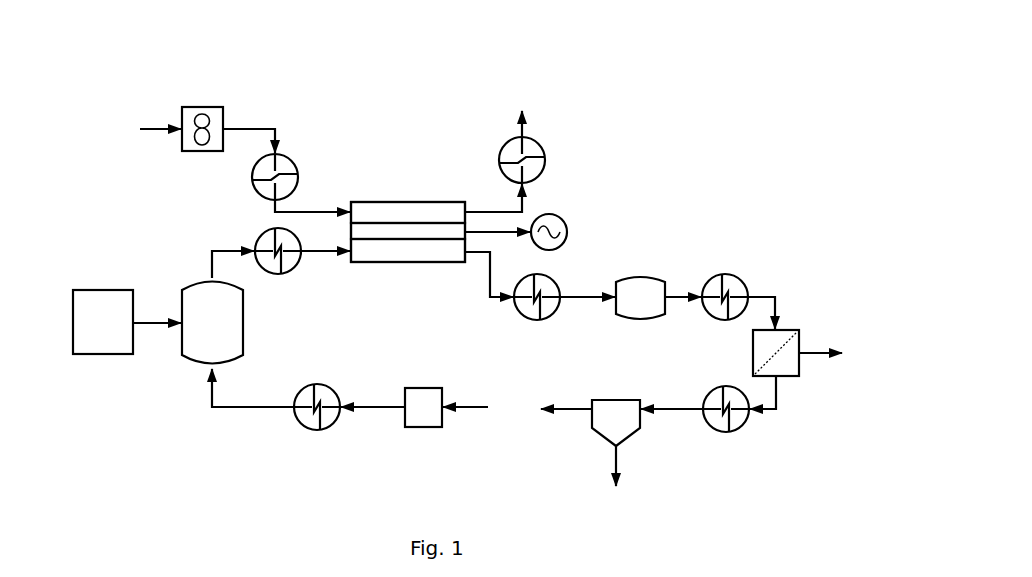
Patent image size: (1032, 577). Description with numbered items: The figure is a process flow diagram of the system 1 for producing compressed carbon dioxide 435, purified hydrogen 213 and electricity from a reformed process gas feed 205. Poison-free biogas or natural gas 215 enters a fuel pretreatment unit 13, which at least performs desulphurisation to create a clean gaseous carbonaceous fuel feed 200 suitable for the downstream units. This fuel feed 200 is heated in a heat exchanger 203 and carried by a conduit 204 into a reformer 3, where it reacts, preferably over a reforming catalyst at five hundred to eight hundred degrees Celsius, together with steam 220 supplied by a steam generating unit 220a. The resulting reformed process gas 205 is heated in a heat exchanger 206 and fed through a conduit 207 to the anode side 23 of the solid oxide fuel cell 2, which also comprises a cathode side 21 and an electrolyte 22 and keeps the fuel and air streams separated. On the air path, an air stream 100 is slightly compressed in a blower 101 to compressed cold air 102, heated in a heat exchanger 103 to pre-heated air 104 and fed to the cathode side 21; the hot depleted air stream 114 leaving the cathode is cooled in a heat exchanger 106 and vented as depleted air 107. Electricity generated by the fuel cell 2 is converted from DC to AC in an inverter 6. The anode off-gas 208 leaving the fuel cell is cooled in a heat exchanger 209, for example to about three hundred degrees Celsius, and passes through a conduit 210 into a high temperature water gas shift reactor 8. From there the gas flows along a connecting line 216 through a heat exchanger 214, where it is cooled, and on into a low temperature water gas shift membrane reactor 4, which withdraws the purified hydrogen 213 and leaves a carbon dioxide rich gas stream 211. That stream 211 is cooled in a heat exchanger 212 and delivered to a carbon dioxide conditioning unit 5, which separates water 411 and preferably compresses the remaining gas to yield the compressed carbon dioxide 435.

The system 1 is at (724, 66).
The solid oxide fuel cell 2 is at (410, 136).
The reformer 3 is at (207, 290).
The low temperature water gas shift membrane reactor 4 is at (787, 330).
The CO2 conditioning unit 5 is at (620, 410).
The inverter 6 is at (561, 216).
The high temperature water gas shift reactor 8 is at (638, 275).
The fuel pretreatment unit 13 is at (422, 390).
The cathode side 21 is at (415, 205).
The electrolyte 22 is at (360, 230).
The anode side 23 is at (420, 257).
The air stream 100 is at (157, 127).
The blower 101 is at (202, 105).
The compressed cold air 102 is at (253, 128).
The heat exchanger 103 is at (291, 159).
The pre-heated air 104 is at (328, 208).
The heat exchanger 106 is at (545, 157).
The depleted air 107 is at (527, 114).
The hot depleted air stream 114 is at (493, 208).
The gaseous carbonaceous fuel feed 200 is at (375, 410).
The heat exchanger 203 is at (325, 393).
The conduit 204 is at (252, 408).
The reformed process gas feed 205 is at (233, 248).
The heat exchanger 206 is at (290, 262).
The conduit 207 is at (325, 253).
The anode off-gas 208 is at (488, 288).
The heat exchanger 209 is at (523, 307).
The conduit 210 is at (568, 300).
The carbon dioxide rich gas stream 211 is at (778, 400).
The heat exchanger 212 is at (738, 420).
The purified hydrogen 213 is at (818, 357).
The heat exchanger 214 is at (732, 278).
The biogas or natural gas 215 is at (475, 410).
The connecting line 216 is at (677, 298).
The steam 220 is at (158, 318).
The steam generating unit 220a is at (98, 355).
The water 411 is at (617, 460).
The compressed carbon dioxide 435 is at (573, 410).